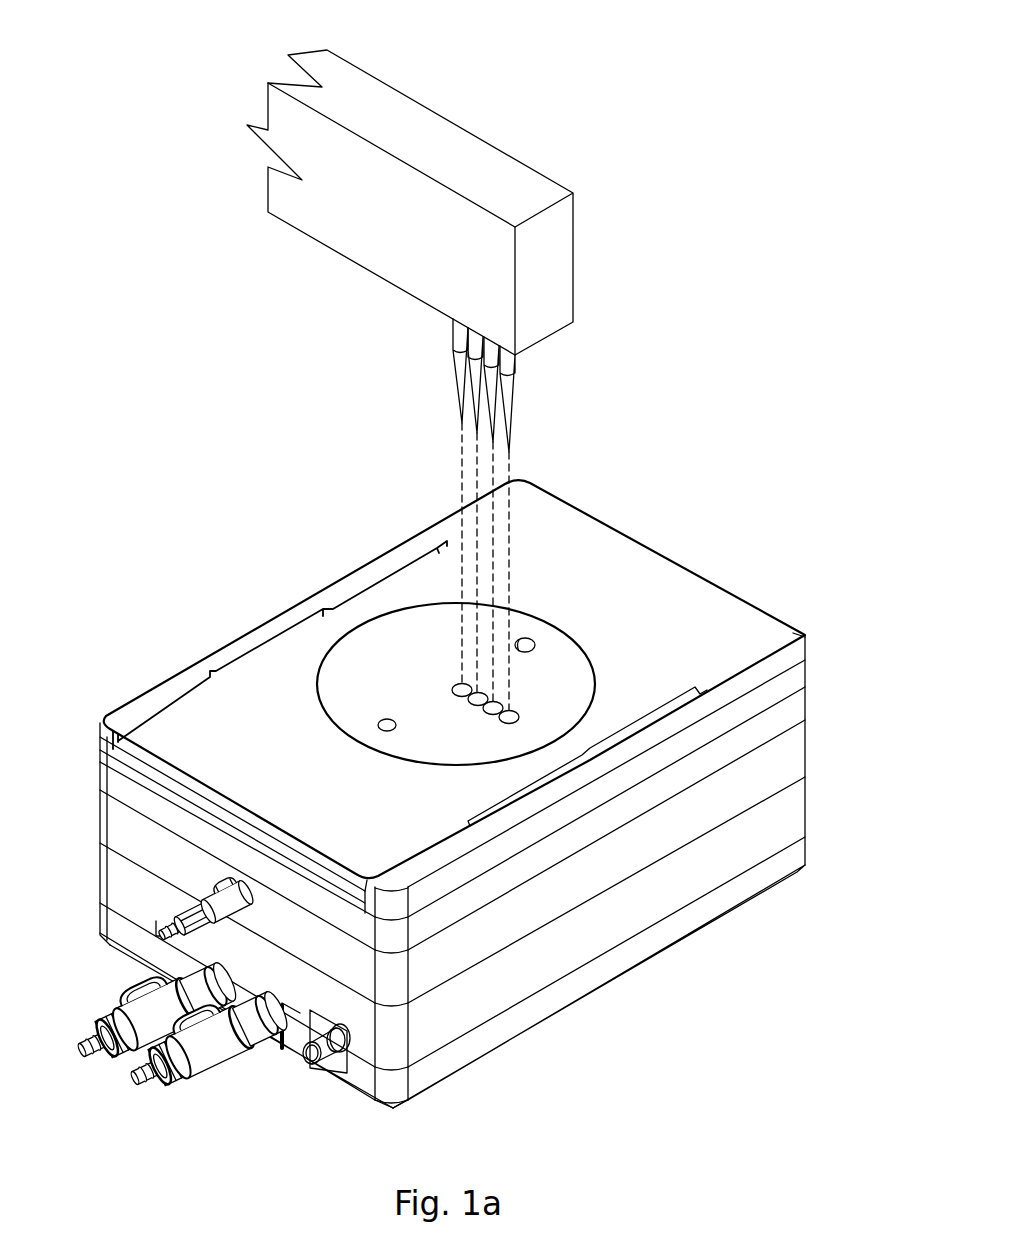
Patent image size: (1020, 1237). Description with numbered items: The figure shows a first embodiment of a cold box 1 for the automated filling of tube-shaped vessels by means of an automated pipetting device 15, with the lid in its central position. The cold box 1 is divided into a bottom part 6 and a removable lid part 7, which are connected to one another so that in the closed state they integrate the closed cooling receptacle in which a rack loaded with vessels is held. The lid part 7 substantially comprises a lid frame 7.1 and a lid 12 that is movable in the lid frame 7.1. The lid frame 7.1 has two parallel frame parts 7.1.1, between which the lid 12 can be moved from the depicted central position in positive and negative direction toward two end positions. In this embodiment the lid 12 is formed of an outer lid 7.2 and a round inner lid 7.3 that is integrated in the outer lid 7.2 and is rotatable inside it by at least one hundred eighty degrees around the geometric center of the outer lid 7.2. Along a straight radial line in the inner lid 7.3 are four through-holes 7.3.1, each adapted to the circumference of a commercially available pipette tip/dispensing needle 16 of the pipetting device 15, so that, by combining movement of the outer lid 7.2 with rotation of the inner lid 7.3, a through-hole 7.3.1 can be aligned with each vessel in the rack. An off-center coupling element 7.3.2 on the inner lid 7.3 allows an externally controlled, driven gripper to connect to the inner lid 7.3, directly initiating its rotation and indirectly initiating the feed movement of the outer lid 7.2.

The cold box 1 is at (72, 555).
The bottom part 6 is at (810, 868).
The lid part 7 is at (815, 633).
The lid frame 7.1 is at (812, 445).
The frame parts 7.1.1 is at (528, 485).
The outer lid 7.2 is at (268, 702).
The inner lid 7.3 is at (350, 643).
The through-holes 7.3.1 is at (455, 682).
The coupling element 7.3.2 is at (532, 651).
The lid 12 is at (287, 458).
The automated pipetting device 15 is at (527, 188).
The pipette tip/dispensing needle 16 is at (478, 378).